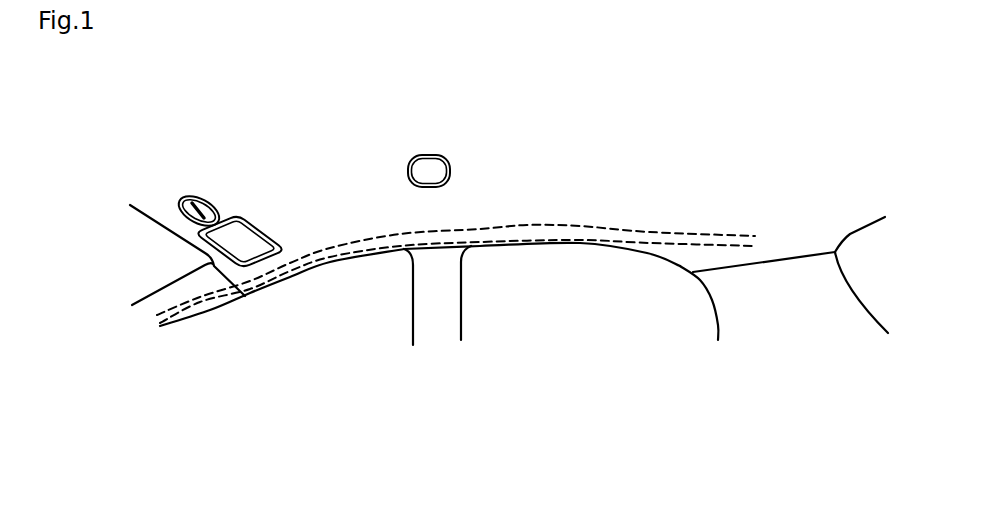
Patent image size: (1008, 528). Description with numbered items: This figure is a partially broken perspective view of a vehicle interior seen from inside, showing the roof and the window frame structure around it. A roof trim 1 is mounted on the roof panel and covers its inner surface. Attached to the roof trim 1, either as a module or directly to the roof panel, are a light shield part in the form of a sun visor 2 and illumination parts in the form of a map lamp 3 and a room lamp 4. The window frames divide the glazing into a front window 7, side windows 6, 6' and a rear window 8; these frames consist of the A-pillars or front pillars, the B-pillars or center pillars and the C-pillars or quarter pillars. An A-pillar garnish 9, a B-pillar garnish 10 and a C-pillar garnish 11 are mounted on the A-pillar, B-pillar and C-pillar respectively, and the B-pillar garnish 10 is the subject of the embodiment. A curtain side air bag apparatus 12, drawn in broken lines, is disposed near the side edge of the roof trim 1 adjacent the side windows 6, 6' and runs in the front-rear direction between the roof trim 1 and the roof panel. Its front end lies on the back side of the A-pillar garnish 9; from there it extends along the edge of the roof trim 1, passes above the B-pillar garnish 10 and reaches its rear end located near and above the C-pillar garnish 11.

The roof trim 1 is at (583, 143).
The sun visor 2 is at (248, 223).
The map lamp 3 is at (192, 197).
The room lamp 4 is at (425, 155).
The side window 6 is at (282, 309).
The side window 6' is at (542, 312).
The front window 7 is at (146, 262).
The rear window 8 is at (867, 243).
The A-pillar garnish 9 is at (188, 314).
The B-pillar garnish 10 is at (455, 308).
The C-pillar garnish 11 is at (732, 315).
The curtain side air bag apparatus 12 is at (528, 228).